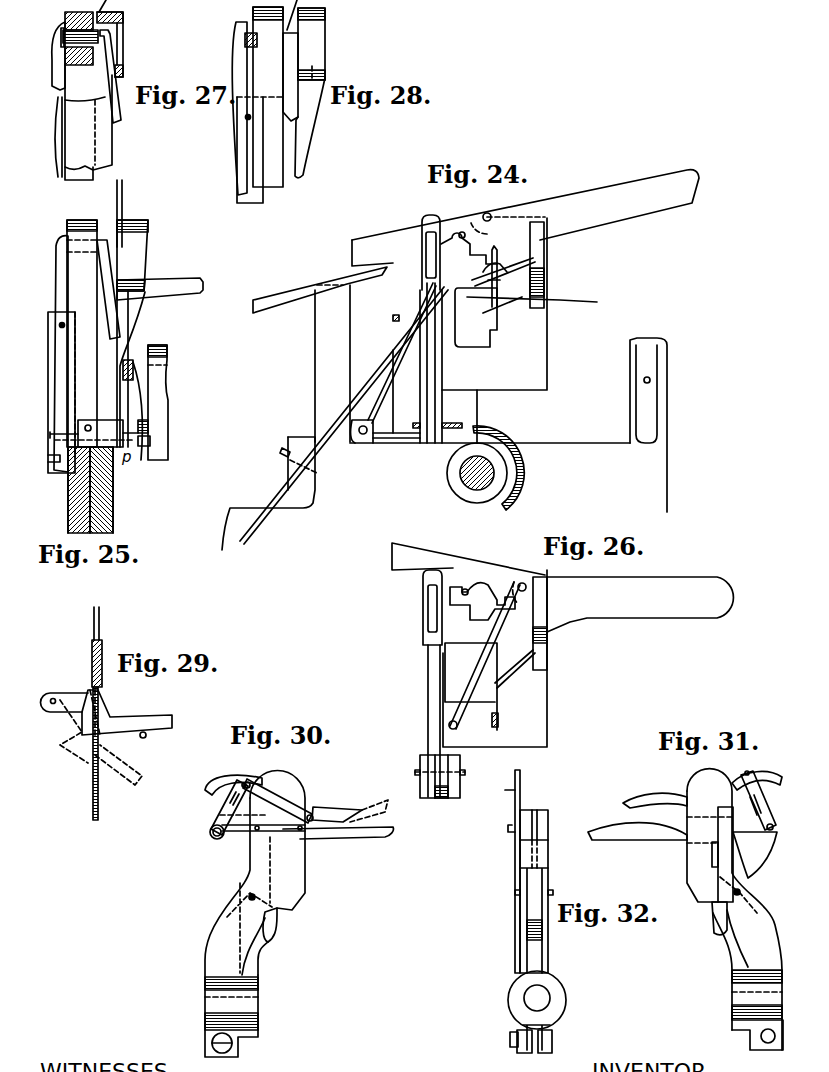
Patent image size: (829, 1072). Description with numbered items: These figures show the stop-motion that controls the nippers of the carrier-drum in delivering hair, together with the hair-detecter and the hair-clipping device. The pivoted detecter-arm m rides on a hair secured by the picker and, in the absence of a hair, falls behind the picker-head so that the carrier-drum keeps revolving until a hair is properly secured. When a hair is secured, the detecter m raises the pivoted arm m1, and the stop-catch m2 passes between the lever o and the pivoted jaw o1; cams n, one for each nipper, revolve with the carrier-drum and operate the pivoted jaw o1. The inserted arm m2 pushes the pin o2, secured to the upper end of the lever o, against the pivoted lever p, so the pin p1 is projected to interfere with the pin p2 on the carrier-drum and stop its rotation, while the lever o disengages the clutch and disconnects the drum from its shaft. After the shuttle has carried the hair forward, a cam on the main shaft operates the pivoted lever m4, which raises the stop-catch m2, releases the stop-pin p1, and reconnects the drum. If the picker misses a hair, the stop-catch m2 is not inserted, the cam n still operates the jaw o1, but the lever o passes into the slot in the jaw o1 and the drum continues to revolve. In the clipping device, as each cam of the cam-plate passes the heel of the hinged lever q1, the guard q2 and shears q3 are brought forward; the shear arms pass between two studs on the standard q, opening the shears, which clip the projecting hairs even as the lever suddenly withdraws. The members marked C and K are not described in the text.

In FIG. 27, the lever o is at (127, 106).
In FIG. 28, the lever o is at (298, 115).
In FIG. 25, the lever o is at (122, 326).
In FIG. 27, the pivoted jaw o1 is at (123, 33).
In FIG. 28, the pivoted jaw o1 is at (311, 44).
In FIG. 25, the pivoted jaw o1 is at (141, 255).
In FIG. 24, the pivoted jaw o1 is at (431, 329).
In FIG. 26, the pivoted jaw o1 is at (443, 683).
In FIG. 25, the pin o2 is at (101, 240).
In FIG. 28, the pivoted lever p is at (256, 112).
In FIG. 25, the pivoted lever p is at (48, 327).
In FIG. 25, the stop-pin p1 is at (158, 450).
In FIG. 25, the pin p2 is at (150, 422).
In FIG. 25, the detecter-arm m is at (160, 281).
In FIG. 24, the detecter-arm m is at (526, 296).
In FIG. 29, the detecter-arm m is at (107, 712).
In FIG. 24, the pivoted arm m1 is at (525, 205).
In FIG. 26, the pivoted arm m1 is at (640, 604).
In FIG. 24, the stop-catch m2 is at (372, 252).
In FIG. 26, the stop-catch m2 is at (468, 559).
In FIG. 24, the pivoted lever m4 is at (320, 290).
In FIG. 25, the cam n is at (132, 406).
In FIG. 25, the frame member C is at (168, 363).
In FIG. 24, the wheel K is at (497, 468).
In FIG. 30, the standard q is at (255, 914).
In FIG. 32, the standard q is at (550, 950).
In FIG. 31, the standard q is at (735, 909).
In FIG. 30, the hinged lever q1 is at (277, 921).
In FIG. 31, the hinged lever q1 is at (775, 851).
In FIG. 30, the guard q2 is at (394, 832).
In FIG. 31, the guard q2 is at (637, 816).
In FIG. 30, the shears q3 is at (325, 808).